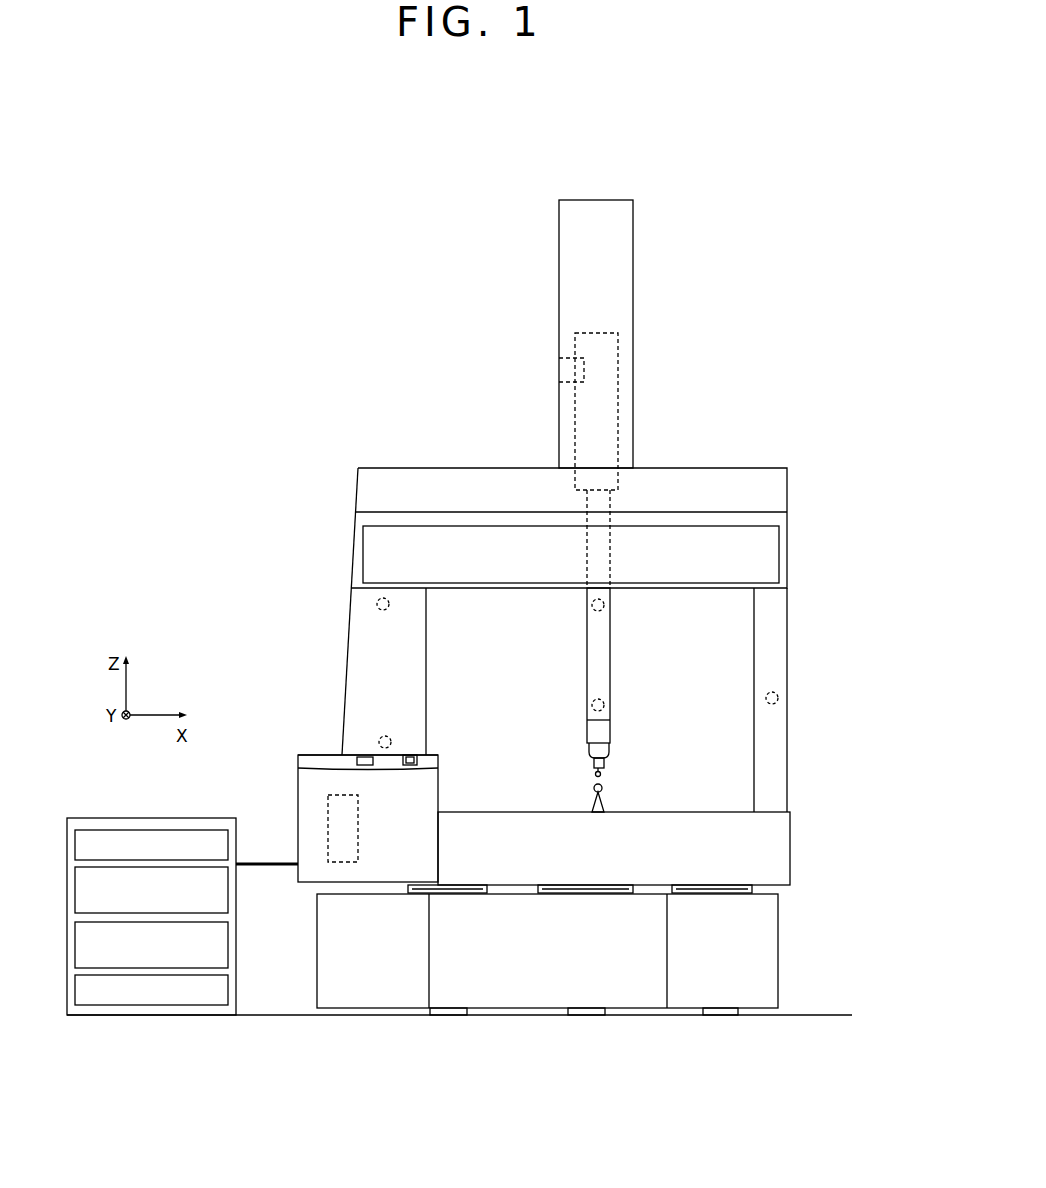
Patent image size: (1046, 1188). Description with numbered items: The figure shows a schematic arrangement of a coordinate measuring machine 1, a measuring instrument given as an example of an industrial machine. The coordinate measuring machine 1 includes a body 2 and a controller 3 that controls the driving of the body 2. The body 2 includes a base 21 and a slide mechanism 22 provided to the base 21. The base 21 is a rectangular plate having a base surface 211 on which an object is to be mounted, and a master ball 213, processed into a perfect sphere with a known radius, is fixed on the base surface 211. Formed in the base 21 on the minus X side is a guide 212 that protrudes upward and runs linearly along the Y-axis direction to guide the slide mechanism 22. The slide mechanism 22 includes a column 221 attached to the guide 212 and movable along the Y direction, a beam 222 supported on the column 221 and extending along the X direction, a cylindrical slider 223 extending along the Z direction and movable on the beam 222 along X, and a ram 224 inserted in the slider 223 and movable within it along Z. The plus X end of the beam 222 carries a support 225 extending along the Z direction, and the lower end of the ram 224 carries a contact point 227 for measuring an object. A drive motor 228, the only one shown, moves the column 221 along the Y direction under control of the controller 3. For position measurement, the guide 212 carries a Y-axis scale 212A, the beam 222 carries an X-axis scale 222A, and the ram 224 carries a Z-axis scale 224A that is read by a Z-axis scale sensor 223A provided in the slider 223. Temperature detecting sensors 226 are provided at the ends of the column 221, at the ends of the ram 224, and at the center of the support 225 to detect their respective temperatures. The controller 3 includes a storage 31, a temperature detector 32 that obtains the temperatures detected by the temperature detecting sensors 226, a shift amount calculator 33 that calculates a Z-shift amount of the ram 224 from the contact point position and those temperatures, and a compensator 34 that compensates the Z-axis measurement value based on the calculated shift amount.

The coordinate measuring machine 1 is at (420, 280).
The body 2 is at (788, 467).
The controller 3 is at (118, 817).
The base 21 is at (778, 852).
The slide mechanism 22 is at (348, 458).
The storage 31 is at (229, 845).
The temperature detector 32 is at (229, 890).
The shift amount calculator 33 is at (229, 945).
The compensator 34 is at (229, 990).
The base surface 211 is at (716, 812).
The guide 212 is at (310, 754).
The Y-axis scale 212A is at (326, 742).
The master ball 213 is at (594, 787).
The column 221 is at (346, 641).
The beam 222 is at (497, 590).
The X-axis scale 222A is at (760, 556).
The slider 223 is at (633, 291).
The Z-axis scale sensor 223A is at (575, 358).
The ram 224 is at (611, 664).
The Z-axis scale 224A is at (618, 392).
The support 225 is at (788, 636).
The temperature detecting sensors 226 is at (376, 604).
The contact point 227 is at (622, 767).
The drive motor 228 is at (328, 800).